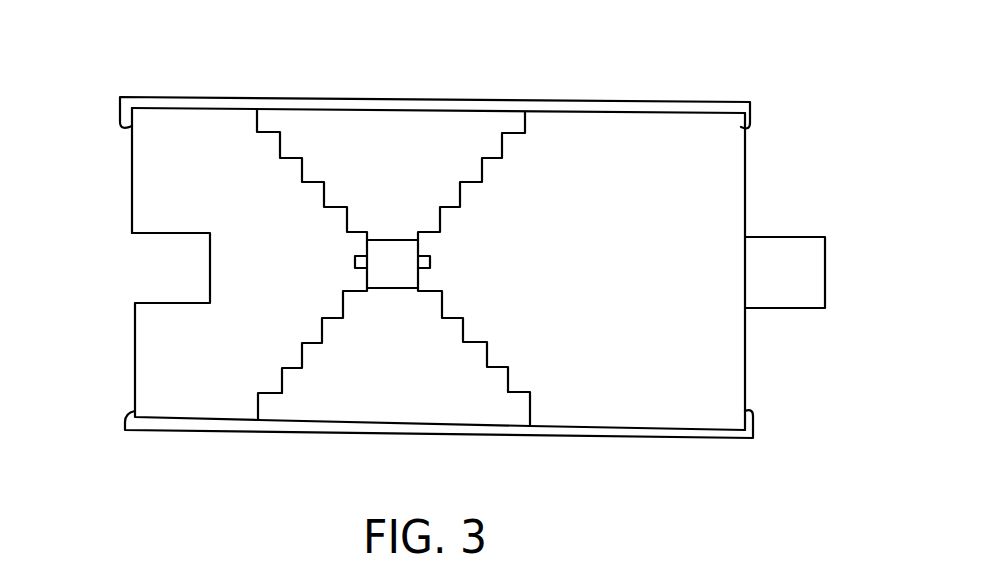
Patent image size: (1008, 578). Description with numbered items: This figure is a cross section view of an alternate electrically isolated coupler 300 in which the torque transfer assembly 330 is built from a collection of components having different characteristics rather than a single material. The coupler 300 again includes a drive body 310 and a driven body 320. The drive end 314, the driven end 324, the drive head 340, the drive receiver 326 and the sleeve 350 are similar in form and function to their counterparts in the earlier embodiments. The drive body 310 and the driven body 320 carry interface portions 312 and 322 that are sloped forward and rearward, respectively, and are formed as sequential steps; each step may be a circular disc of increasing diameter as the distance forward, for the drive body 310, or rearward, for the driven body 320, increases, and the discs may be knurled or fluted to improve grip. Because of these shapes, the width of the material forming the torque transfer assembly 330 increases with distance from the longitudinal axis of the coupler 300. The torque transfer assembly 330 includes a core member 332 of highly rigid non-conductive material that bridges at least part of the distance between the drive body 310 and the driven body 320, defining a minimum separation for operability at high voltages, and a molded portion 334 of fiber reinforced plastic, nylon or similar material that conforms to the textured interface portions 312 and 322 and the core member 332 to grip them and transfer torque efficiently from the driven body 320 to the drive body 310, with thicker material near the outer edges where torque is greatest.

The coupler 300 is at (770, 75).
The drive body 310 is at (628, 395).
The interface portion 312 is at (500, 380).
The drive end 314 is at (746, 182).
The driven body 320 is at (218, 378).
The interface portion 322 is at (275, 397).
The driven end 324 is at (131, 187).
The drive receiver 326 is at (150, 268).
The torque transfer assembly 330 is at (380, 145).
The core member 332 is at (395, 258).
The molded portion 334 is at (415, 390).
The drive head 340 is at (770, 293).
The sleeve 350 is at (288, 99).